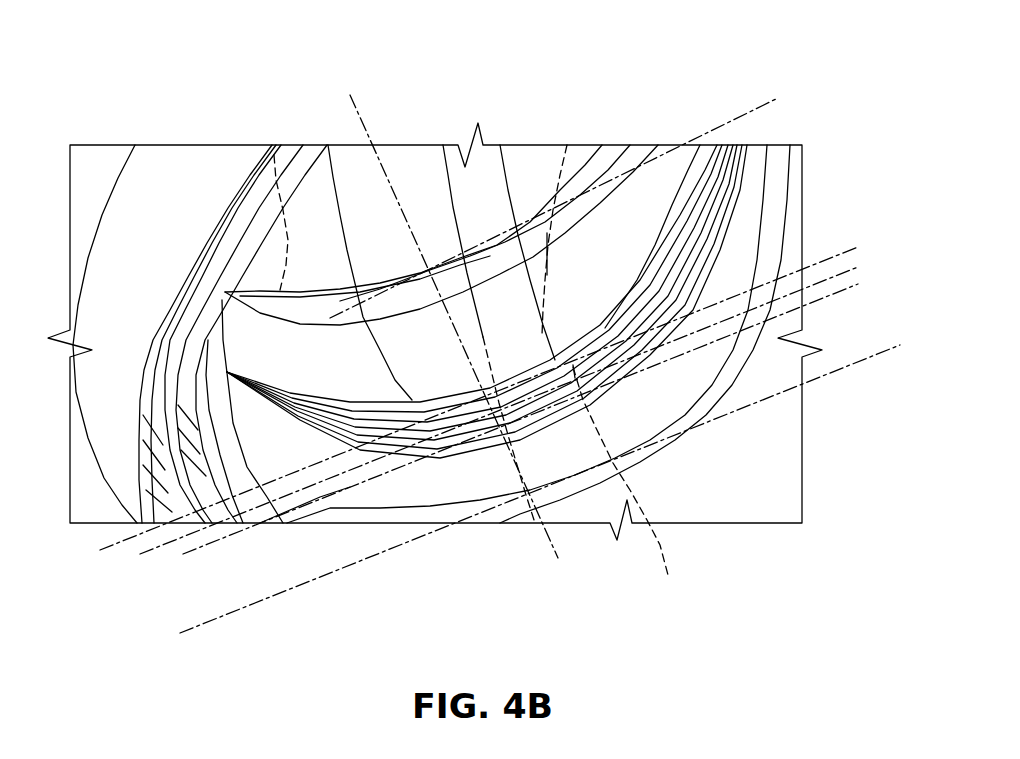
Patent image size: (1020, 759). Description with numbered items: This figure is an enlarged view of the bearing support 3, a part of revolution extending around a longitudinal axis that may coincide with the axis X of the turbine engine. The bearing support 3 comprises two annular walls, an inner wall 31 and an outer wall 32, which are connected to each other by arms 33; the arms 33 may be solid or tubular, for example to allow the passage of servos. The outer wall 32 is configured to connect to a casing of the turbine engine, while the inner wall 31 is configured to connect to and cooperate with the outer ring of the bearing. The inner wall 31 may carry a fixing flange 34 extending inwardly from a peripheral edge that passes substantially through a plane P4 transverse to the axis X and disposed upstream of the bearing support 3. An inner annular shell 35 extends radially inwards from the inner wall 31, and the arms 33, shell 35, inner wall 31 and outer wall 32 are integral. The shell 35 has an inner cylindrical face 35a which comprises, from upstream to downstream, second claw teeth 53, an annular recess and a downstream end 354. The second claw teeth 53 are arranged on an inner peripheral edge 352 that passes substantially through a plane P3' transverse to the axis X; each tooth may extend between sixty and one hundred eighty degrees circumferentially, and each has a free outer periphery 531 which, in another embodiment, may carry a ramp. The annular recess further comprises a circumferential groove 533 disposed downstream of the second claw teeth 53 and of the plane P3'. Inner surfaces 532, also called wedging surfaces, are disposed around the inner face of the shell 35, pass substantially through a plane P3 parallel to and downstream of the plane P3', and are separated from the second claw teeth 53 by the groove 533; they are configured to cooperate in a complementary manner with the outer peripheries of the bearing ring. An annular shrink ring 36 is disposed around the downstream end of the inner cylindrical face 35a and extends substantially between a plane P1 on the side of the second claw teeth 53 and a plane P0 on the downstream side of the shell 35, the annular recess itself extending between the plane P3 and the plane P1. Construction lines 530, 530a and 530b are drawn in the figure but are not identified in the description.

The bearing support 3 is at (435, 277).
The inner wall 31 is at (210, 306).
The outer wall 32 is at (105, 302).
The arms 33 is at (316, 629).
The fixing flange 34 is at (251, 298).
The inner annular shell 35 is at (557, 295).
The inner cylindrical face 35a is at (337, 567).
The annular shrink ring 36 is at (815, 182).
The inner peripheral edge 352 is at (753, 256).
The downstream end 354 is at (527, 493).
The second claw teeth 53 is at (487, 262).
The groove bottom 530 is at (483, 288).
The groove edge 530a is at (359, 218).
The groove edge 530b is at (568, 197).
The free outer periphery 531 is at (520, 194).
The inner surfaces 532 is at (633, 487).
The circumferential groove 533 is at (850, 327).
The axis X is at (454, 320).
The plane P0 is at (540, 506).
The plane P1 is at (504, 454).
The plane P3 is at (484, 445).
The plane P3' is at (457, 435).
The plane P4 is at (554, 181).